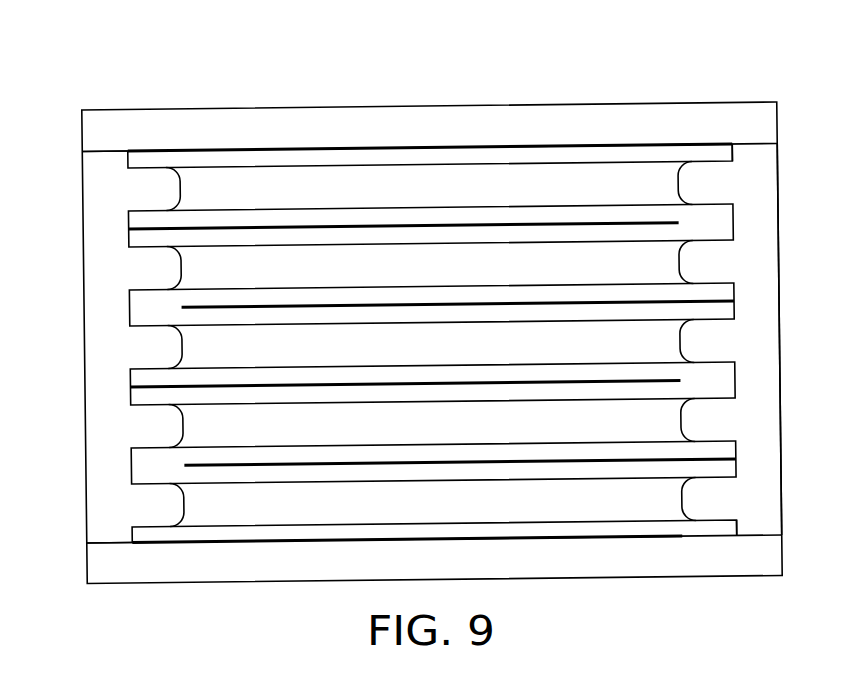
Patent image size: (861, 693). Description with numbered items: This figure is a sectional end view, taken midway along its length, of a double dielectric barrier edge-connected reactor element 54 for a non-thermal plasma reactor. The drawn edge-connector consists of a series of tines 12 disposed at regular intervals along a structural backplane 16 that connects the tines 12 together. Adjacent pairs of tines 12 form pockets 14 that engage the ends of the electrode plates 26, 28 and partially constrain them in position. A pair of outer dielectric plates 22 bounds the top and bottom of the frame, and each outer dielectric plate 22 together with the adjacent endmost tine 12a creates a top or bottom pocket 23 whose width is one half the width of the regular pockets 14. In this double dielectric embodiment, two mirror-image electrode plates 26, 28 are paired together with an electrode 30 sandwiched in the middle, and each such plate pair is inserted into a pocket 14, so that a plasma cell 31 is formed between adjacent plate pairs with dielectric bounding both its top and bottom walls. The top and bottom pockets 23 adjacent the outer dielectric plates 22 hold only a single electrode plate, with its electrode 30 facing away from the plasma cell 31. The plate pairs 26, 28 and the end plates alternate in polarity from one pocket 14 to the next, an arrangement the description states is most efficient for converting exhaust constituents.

The double dielectric barrier edge-connected reactor element 54 is at (112, 72).
The outer dielectric plate 22 is at (670, 120).
The structural backplane 16 is at (767, 457).
The electrode 30 is at (548, 146).
The electrode plate 26 is at (608, 158).
The electrode plate 28 is at (198, 533).
The pocket 14 is at (727, 220).
The plasma cell 31 is at (432, 342).
The top and bottom pocket 23 is at (731, 149).
The endmost tine 12a is at (178, 183).
The tine 12 is at (181, 272).